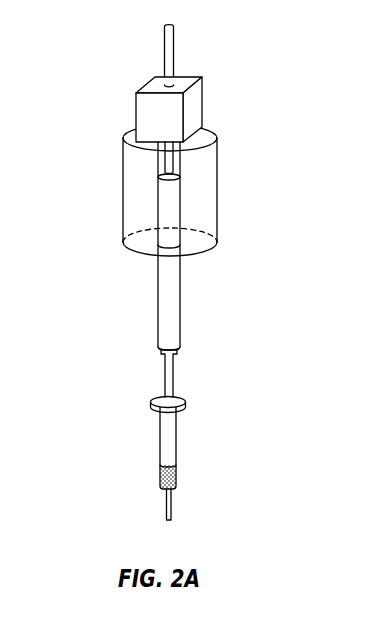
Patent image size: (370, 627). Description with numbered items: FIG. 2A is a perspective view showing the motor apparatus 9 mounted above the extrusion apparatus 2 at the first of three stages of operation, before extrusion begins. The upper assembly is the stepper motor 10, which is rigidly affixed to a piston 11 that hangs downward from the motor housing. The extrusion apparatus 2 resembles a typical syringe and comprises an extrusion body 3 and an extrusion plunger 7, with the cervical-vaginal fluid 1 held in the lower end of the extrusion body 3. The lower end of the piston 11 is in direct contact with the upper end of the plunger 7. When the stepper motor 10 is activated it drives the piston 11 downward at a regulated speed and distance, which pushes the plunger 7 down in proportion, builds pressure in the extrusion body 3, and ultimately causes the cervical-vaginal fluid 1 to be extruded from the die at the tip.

The cervical-vaginal fluid 1 is at (162, 477).
The extrusion apparatus 2 is at (118, 340).
The extrusion body 3 is at (165, 438).
The extrusion plunger 7 is at (165, 378).
The motor apparatus 9 is at (111, 115).
The stepper motor 10 is at (222, 22).
The piston 11 is at (165, 222).